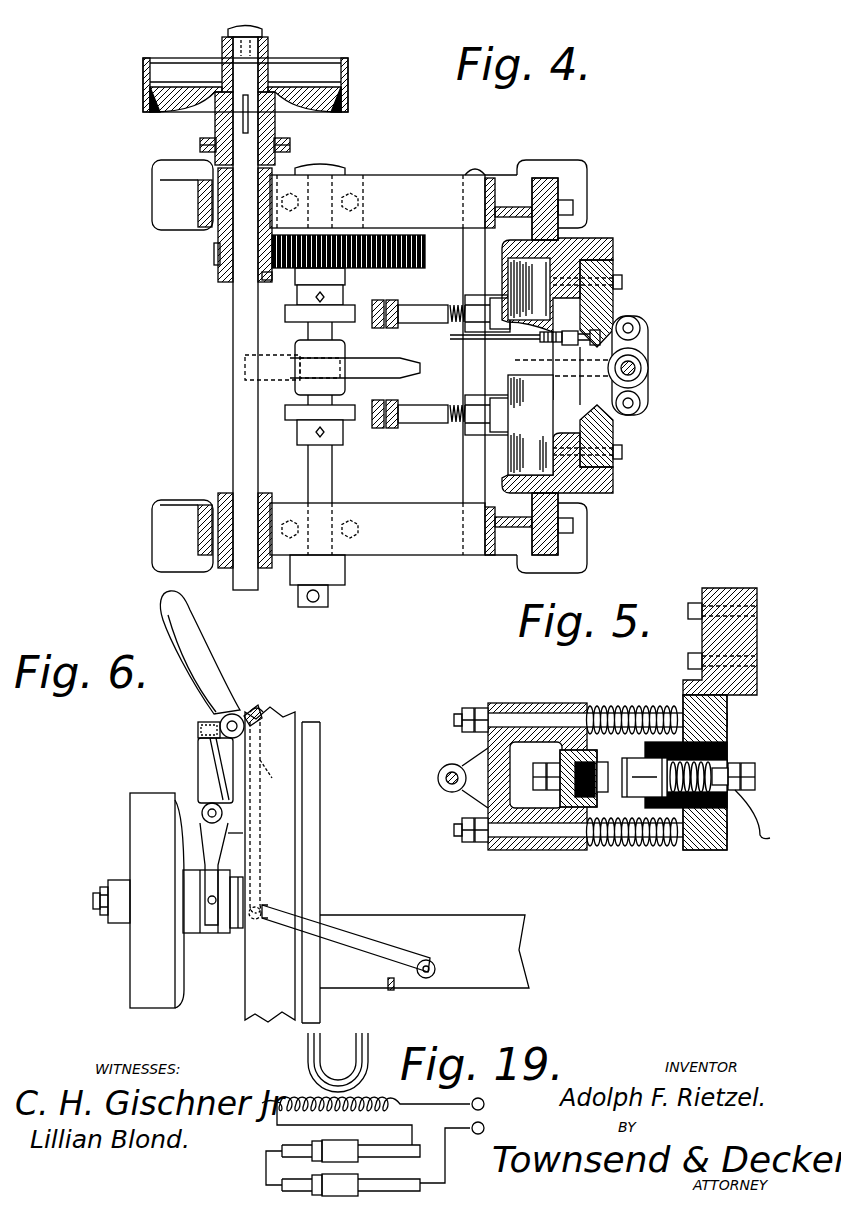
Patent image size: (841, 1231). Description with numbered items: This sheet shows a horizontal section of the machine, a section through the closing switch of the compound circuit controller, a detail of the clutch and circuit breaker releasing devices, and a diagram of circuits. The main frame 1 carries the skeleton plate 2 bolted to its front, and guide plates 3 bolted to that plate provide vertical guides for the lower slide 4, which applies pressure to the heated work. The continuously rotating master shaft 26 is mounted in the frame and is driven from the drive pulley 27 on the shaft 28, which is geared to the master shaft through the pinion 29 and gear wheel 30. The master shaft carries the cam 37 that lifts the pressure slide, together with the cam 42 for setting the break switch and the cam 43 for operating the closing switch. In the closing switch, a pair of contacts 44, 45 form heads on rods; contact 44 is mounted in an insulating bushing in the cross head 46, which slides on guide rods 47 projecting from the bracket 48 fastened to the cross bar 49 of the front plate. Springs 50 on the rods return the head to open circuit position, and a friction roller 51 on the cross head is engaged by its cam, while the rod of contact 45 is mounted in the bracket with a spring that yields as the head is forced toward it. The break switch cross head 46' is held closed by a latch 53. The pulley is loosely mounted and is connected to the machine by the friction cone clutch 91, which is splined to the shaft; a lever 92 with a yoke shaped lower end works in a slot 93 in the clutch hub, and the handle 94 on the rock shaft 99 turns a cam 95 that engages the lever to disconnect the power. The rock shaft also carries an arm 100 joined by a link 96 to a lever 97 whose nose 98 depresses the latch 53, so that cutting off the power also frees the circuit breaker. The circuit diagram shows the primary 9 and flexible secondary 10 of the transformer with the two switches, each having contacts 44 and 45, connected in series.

In FIG. 4, the main frame 1 is at (397, 180).
In FIG. 6, the main frame 1 is at (387, 864).
In FIG. 4, the skeleton plate 2 is at (565, 250).
In FIG. 6, the skeleton plate 2 is at (308, 878).
In FIG. 4, the guide plates 3 is at (616, 282).
In FIG. 4, the lower slide 4 is at (613, 417).
In FIG. 19, the primary 9 is at (297, 1096).
In FIG. 19, the flexible secondary 10 is at (338, 1062).
In FIG. 4, the main or master shaft 26 is at (330, 487).
In FIG. 4, the drive pulley 27 is at (148, 97).
In FIG. 6, the drive pulley 27 is at (138, 900).
In FIG. 4, the shaft 28 is at (233, 300).
In FIG. 4, the pinion 29 is at (214, 255).
In FIG. 4, the gear wheel 30 is at (426, 252).
In FIG. 4, the cam 37 is at (280, 375).
In FIG. 4, the cam 42 is at (295, 312).
In FIG. 4, the cam 43 is at (362, 420).
In FIG. 5, the contact 44 is at (604, 806).
In FIG. 19, the contact 44 is at (315, 1148).
In FIG. 5, the contact 45 is at (642, 802).
In FIG. 19, the contact 45 is at (350, 1150).
In FIG. 4, the cross head 46 is at (418, 431).
In FIG. 5, the cross head 46 is at (537, 764).
In FIG. 4, the cross head 46' is at (418, 301).
In FIG. 5, the guide rods 47 is at (570, 719).
In FIG. 4, the bracket 48 is at (500, 302).
In FIG. 5, the bracket 48 is at (722, 852).
In FIG. 4, the cross bar 49 is at (532, 390).
In FIG. 5, the cross bar 49 is at (735, 592).
In FIG. 5, the springs 50 is at (645, 712).
In FIG. 5, the friction roller 51 is at (446, 770).
In FIG. 4, the latch 53 is at (455, 338).
In FIG. 6, the latch 53 is at (388, 986).
In FIG. 4, the friction cone clutch 91 is at (316, 112).
In FIG. 6, the friction cone clutch 91 is at (195, 934).
In FIG. 6, the lever 92 is at (198, 760).
In FIG. 6, the slot 93 is at (211, 934).
In FIG. 6, the handle 94 is at (200, 668).
In FIG. 6, the cam 95 is at (210, 735).
In FIG. 6, the link 96 is at (269, 817).
In FIG. 6, the lever 97 is at (360, 950).
In FIG. 6, the nose 98 is at (411, 976).
In FIG. 6, the rock shaft 99 is at (233, 712).
In FIG. 6, the arm 100 is at (252, 708).